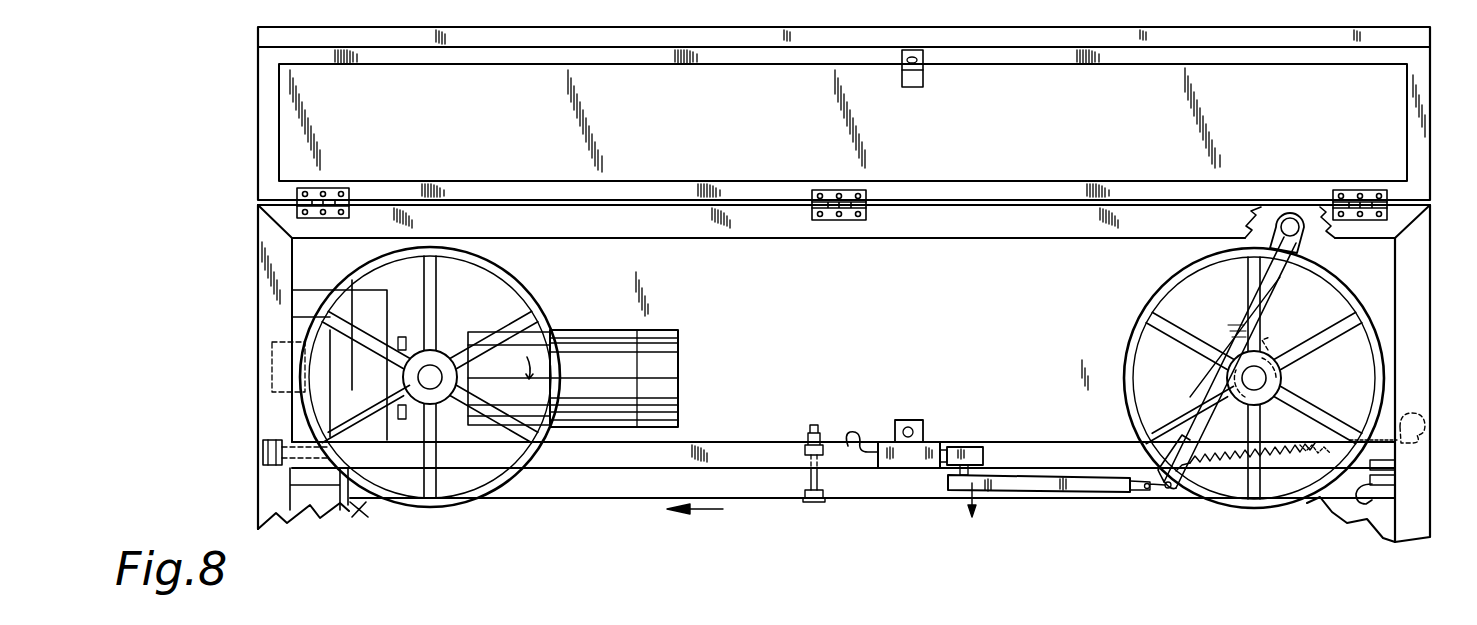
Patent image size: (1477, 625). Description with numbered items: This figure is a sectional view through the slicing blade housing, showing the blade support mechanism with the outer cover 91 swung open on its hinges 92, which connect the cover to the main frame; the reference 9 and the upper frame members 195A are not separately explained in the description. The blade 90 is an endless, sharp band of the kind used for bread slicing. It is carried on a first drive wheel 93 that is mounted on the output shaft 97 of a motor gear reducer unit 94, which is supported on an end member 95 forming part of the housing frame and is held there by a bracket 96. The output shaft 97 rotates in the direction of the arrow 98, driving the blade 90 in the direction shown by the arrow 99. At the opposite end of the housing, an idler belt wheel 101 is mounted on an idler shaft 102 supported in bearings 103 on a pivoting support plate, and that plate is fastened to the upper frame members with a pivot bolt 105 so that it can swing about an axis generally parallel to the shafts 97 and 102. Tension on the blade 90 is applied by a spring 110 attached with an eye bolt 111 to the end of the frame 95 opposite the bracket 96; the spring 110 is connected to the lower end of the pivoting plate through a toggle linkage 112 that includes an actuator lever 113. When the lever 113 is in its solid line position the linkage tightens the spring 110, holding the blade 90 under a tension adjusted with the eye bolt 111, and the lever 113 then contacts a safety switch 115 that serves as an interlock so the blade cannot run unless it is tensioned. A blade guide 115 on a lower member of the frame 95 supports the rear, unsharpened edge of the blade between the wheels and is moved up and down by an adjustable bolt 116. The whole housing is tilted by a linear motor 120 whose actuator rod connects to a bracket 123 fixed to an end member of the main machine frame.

The cabinet housing 9 is at (1418, 164).
The blade 90 is at (865, 502).
The outer cover 91 is at (1048, 124).
The hinges 92 is at (866, 210).
The first drive wheel 93 is at (527, 300).
The motor gear reducer unit 94 is at (588, 340).
The end member 95 is at (280, 258).
The bracket 96 is at (311, 297).
The output shaft 97 is at (443, 378).
The arrow 98 is at (533, 366).
The arrow 99 is at (694, 510).
The idler belt wheel 101 is at (1128, 357).
The idler shaft 102 is at (1262, 377).
The bearings 103 is at (1283, 342).
The pivot bolt 105 is at (1286, 218).
The spring 110 is at (1289, 476).
The eye bolt 111 is at (1393, 427).
The toggle linkage 112 is at (1166, 493).
The actuator lever 113 is at (1019, 483).
The safety switch 115 is at (970, 453).
The adjustable bolt 116 is at (819, 433).
The linear motor 120 is at (330, 368).
The bracket 123 is at (372, 518).
The top rail 195A is at (1142, 215).